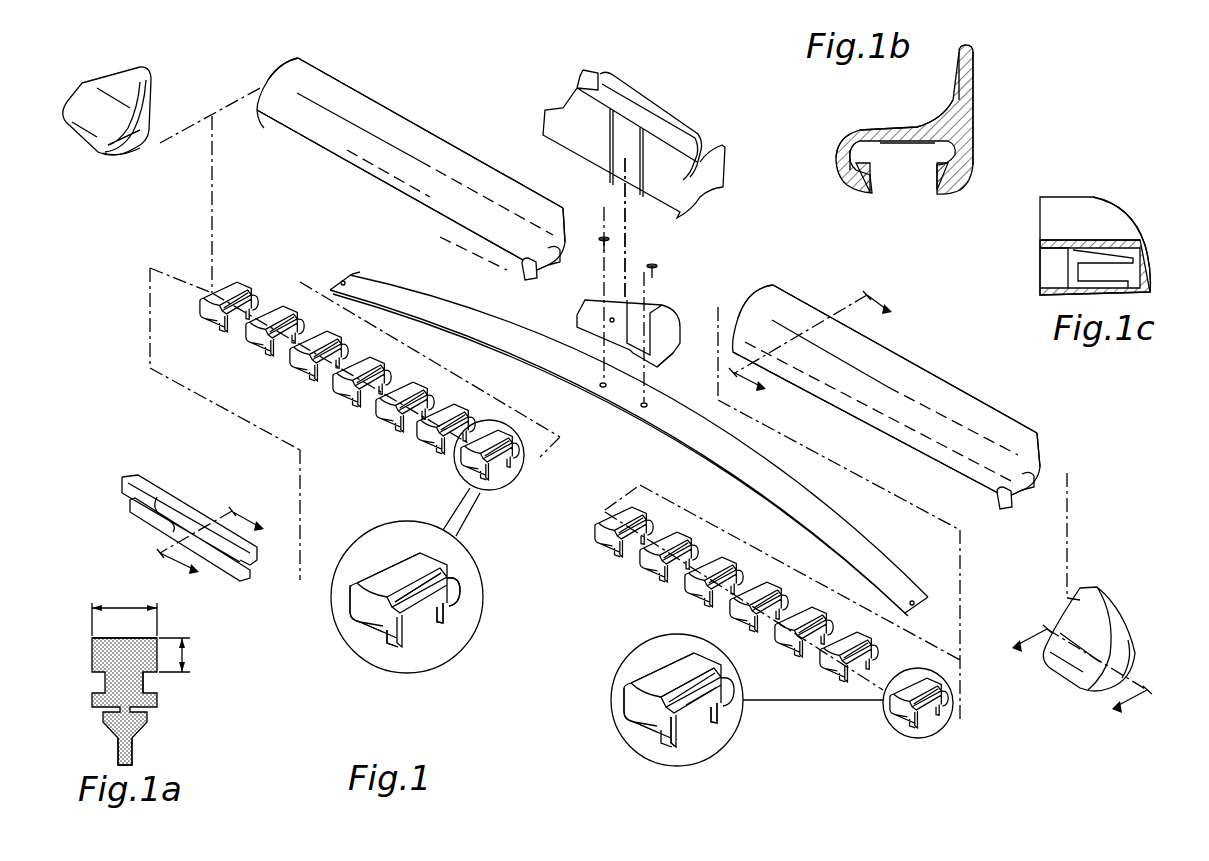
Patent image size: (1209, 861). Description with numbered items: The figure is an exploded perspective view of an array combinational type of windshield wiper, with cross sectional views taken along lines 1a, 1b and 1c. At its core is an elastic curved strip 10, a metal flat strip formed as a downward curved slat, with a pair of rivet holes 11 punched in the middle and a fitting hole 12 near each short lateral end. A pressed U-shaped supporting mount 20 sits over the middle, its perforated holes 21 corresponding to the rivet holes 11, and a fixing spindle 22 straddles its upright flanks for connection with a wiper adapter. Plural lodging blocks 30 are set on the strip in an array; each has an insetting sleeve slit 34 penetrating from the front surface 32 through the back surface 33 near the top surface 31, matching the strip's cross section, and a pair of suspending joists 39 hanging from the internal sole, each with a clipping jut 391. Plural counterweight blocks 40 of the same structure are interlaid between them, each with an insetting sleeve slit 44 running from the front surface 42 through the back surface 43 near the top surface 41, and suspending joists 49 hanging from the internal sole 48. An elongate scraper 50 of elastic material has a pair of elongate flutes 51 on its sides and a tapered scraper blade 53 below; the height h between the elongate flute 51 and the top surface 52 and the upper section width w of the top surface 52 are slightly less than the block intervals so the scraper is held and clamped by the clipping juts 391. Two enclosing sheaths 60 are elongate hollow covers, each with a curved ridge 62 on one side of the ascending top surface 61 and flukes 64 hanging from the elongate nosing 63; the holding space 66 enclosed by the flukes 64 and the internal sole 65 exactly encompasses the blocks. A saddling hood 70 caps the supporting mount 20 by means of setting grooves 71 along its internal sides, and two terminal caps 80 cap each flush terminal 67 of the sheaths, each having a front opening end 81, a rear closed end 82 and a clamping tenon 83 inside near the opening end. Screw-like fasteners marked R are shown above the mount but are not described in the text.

In FIG. 1, the elastic curved strip 10 is at (820, 522).
In FIG. 1, the rivet holes 11 is at (599, 387).
In FIG. 1, the fitting hole 12 is at (347, 278).
In FIG. 1, the supporting mount 20 is at (665, 312).
In FIG. 1, the perforated holes 21 is at (665, 360).
In FIG. 1, the fixing spindle 22 is at (628, 280).
In FIG. 1, the lodging blocks 30 is at (205, 312).
In FIG. 1, the top surface 31 is at (663, 673).
In FIG. 1, the front surface 32 is at (650, 717).
In FIG. 1, the back surface 33 is at (606, 693).
In FIG. 1, the insetting sleeve slit 34 is at (713, 675).
In FIG. 1, the suspending joists 39 is at (710, 712).
In FIG. 1, the clipping jut 391 is at (695, 717).
In FIG. 1, the counterweight blocks 40 is at (252, 330).
In FIG. 1, the top surface 41 is at (397, 583).
In FIG. 1, the front surface 42 is at (380, 635).
In FIG. 1, the back surface 43 is at (343, 604).
In FIG. 1, the insetting sleeve slit 44 is at (449, 592).
In FIG. 1, the internal sole 48 is at (415, 607).
In FIG. 1, the suspending joists 49 is at (447, 617).
In FIG. 1, the elongate scraper 50 is at (200, 515).
In FIG. 1A, the elongate scraper 50 is at (92, 672).
In FIG. 1A, the elongate flutes 51 is at (148, 685).
In FIG. 1A, the top surface 52 is at (120, 637).
In FIG. 1A, the scraper blade 53 is at (132, 750).
In FIG. 1, the enclosing sheaths 60 is at (362, 108).
In FIG. 1B, the enclosing sheaths 60 is at (974, 99).
In FIG. 1, the ascending top surface 61 is at (288, 92).
In FIG. 1B, the ascending top surface 61 is at (900, 126).
In FIG. 1, the curved ridge 62 is at (449, 132).
In FIG. 1B, the curved ridge 62 is at (961, 50).
In FIG. 1, the elongate nosing 63 is at (500, 248).
In FIG. 1B, the elongate nosing 63 is at (836, 150).
In FIG. 1, the flukes 64 is at (528, 274).
In FIG. 1B, the flukes 64 is at (858, 175).
In FIG. 1, the internal sole 65 is at (543, 268).
In FIG. 1B, the internal sole 65 is at (885, 141).
In FIG. 1B, the holding space 66 is at (908, 172).
In FIG. 1, the flush terminal 67 is at (565, 232).
In FIG. 1, the saddling hood 70 is at (707, 148).
In FIG. 1, the setting grooves 71 is at (655, 115).
In FIG. 1, the terminal caps 80 is at (132, 76).
In FIG. 1C, the terminal caps 80 is at (1075, 215).
In FIG. 1, the front opening end 81 is at (135, 140).
In FIG. 1C, the front opening end 81 is at (1040, 253).
In FIG. 1, the rear closed end 82 is at (1130, 650).
In FIG. 1C, the rear closed end 82 is at (1148, 270).
In FIG. 1C, the clamping tenon 83 is at (1125, 262).
In FIG. 1, the screw R is at (604, 232).
In FIG. 1, the section line 1a- 1a is at (227, 551).
In FIG. 1, the section line 1b- 1b is at (832, 353).
In FIG. 1, the section line 1c- 1c is at (1070, 681).
In FIG. 1A, the upper section width w is at (124, 611).
In FIG. 1A, the height h is at (179, 655).